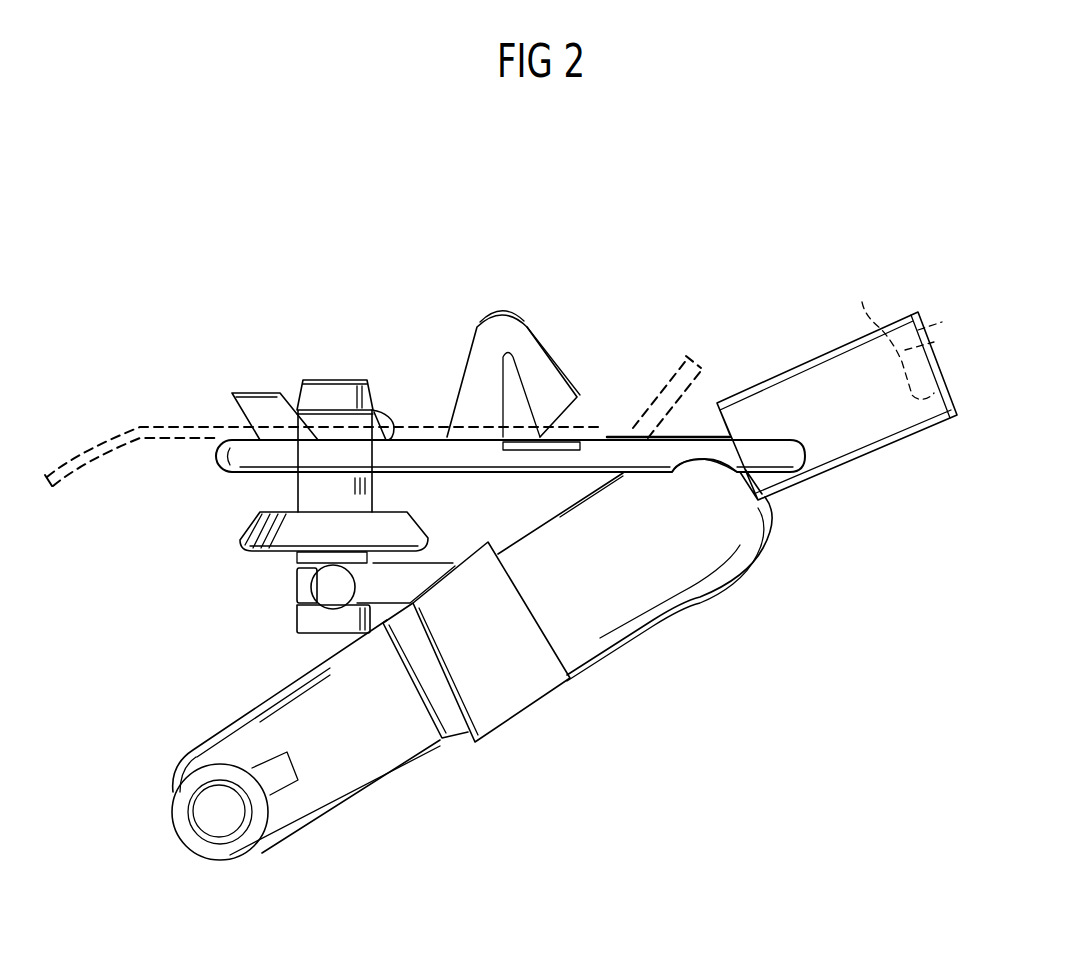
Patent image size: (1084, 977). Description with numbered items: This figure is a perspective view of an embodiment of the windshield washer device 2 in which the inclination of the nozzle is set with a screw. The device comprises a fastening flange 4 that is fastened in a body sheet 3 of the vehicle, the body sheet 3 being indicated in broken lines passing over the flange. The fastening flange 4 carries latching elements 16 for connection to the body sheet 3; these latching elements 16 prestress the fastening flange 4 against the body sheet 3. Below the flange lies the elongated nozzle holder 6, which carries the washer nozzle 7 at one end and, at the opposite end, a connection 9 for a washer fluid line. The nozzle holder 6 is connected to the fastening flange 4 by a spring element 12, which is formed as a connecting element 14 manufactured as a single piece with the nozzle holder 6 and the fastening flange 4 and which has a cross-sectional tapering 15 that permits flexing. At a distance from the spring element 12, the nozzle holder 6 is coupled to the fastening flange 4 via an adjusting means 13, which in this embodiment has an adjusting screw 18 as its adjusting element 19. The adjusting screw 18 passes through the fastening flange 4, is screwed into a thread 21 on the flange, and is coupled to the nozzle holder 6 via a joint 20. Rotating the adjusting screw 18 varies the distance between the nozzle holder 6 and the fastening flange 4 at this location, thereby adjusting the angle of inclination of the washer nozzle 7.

The windshield washer device 2 is at (447, 805).
The body sheet 3 is at (146, 425).
The fastening flange 4 is at (625, 455).
The nozzle holder 6 is at (597, 637).
The washer nozzle 7 is at (898, 336).
The connection 9 is at (235, 852).
The spring element 12 is at (698, 428).
The adjusting means 13 is at (256, 599).
The connecting element 14 is at (764, 457).
The cross-sectional tapering 15 is at (703, 474).
The latching elements 16 is at (273, 406).
The adjusting screw 18 is at (320, 493).
The adjusting element 19 is at (258, 566).
The joint 20 is at (335, 595).
The thread 21 is at (394, 406).